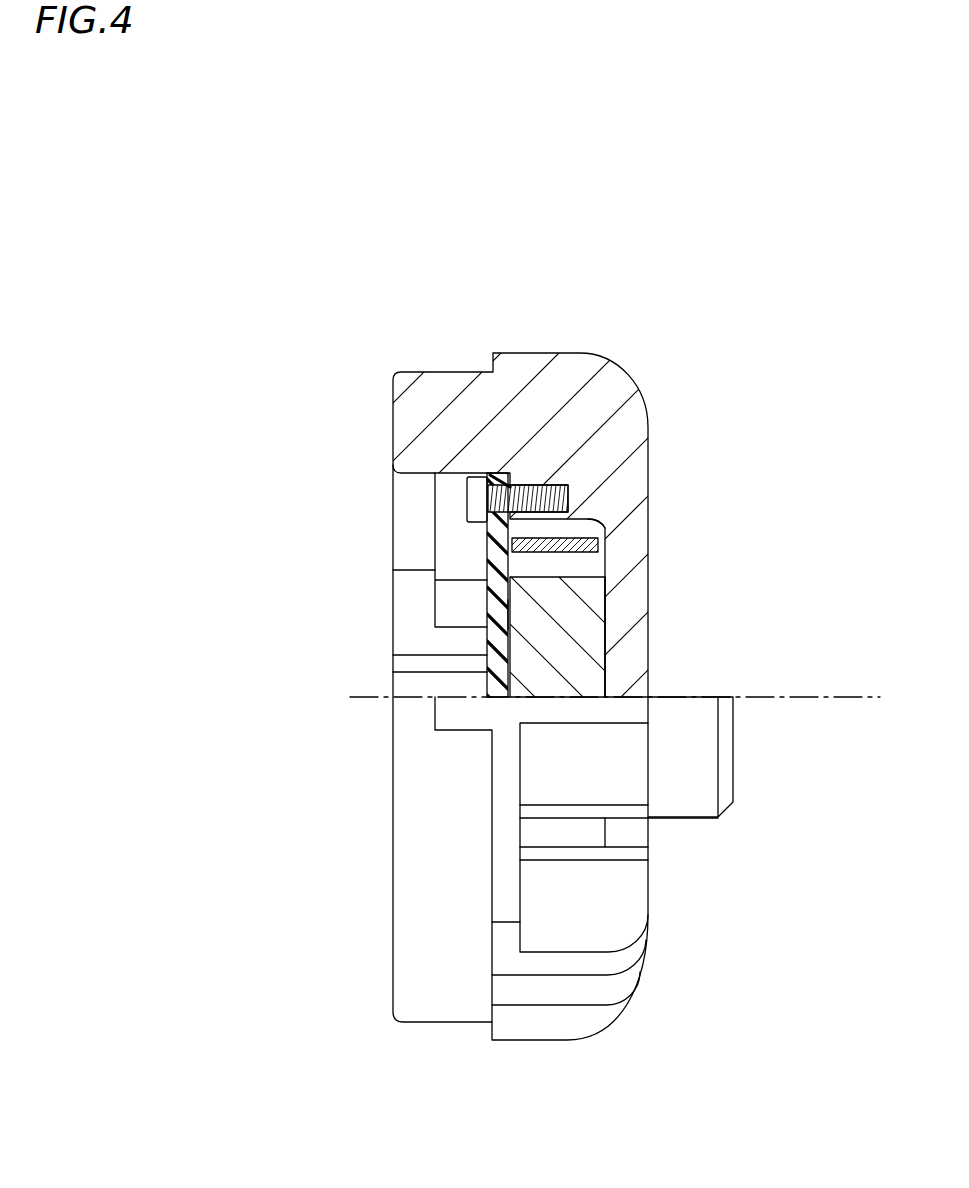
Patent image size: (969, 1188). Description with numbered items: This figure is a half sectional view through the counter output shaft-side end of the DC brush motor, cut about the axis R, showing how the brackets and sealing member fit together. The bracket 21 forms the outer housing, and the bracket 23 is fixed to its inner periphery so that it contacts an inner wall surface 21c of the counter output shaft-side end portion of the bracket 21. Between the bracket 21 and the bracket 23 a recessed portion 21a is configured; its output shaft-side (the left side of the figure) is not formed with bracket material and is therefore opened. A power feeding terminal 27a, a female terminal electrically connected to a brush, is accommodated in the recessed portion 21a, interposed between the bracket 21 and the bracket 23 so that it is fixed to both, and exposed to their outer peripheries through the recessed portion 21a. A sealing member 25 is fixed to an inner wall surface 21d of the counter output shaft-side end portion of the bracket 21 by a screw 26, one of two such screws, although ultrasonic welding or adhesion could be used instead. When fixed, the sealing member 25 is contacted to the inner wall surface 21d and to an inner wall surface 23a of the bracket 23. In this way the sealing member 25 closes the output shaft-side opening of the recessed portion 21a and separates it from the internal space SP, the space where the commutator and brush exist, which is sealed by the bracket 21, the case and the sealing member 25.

The bracket 21 is at (612, 393).
The recessed portion 21a is at (602, 525).
The inner wall surface 21c is at (603, 674).
The inner wall surface 21d is at (506, 479).
The bracket 23 is at (582, 688).
The inner wall surface 23a is at (509, 623).
The sealing member 25 is at (497, 657).
The screw 26 is at (568, 497).
The power feeding terminal 27a is at (598, 546).
The internal space SP is at (416, 515).
The rotation axis R is at (742, 697).